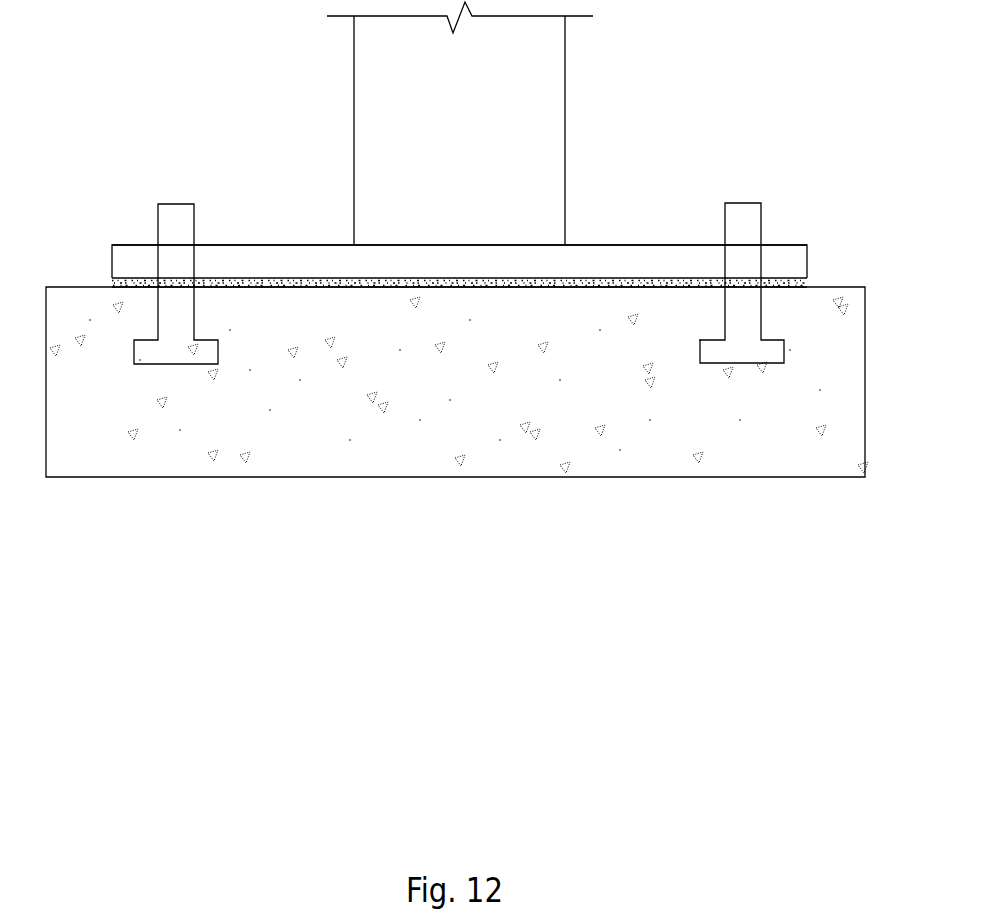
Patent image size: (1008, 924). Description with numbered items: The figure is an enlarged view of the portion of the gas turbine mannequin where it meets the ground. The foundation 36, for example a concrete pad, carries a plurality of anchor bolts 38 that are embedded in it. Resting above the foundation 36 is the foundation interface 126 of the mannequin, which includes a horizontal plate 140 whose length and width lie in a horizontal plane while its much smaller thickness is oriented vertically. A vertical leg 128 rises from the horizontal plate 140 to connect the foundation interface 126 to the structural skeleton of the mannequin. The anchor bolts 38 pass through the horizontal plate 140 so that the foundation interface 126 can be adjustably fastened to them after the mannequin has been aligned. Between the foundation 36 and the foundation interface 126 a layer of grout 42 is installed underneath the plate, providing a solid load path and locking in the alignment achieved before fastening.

The vertical leg 128 is at (548, 118).
The foundation interface 126 is at (613, 263).
The horizontal plate 140 is at (303, 245).
The grout 42 is at (797, 283).
The foundation 36 is at (747, 457).
The anchor bolt 38 is at (177, 222).